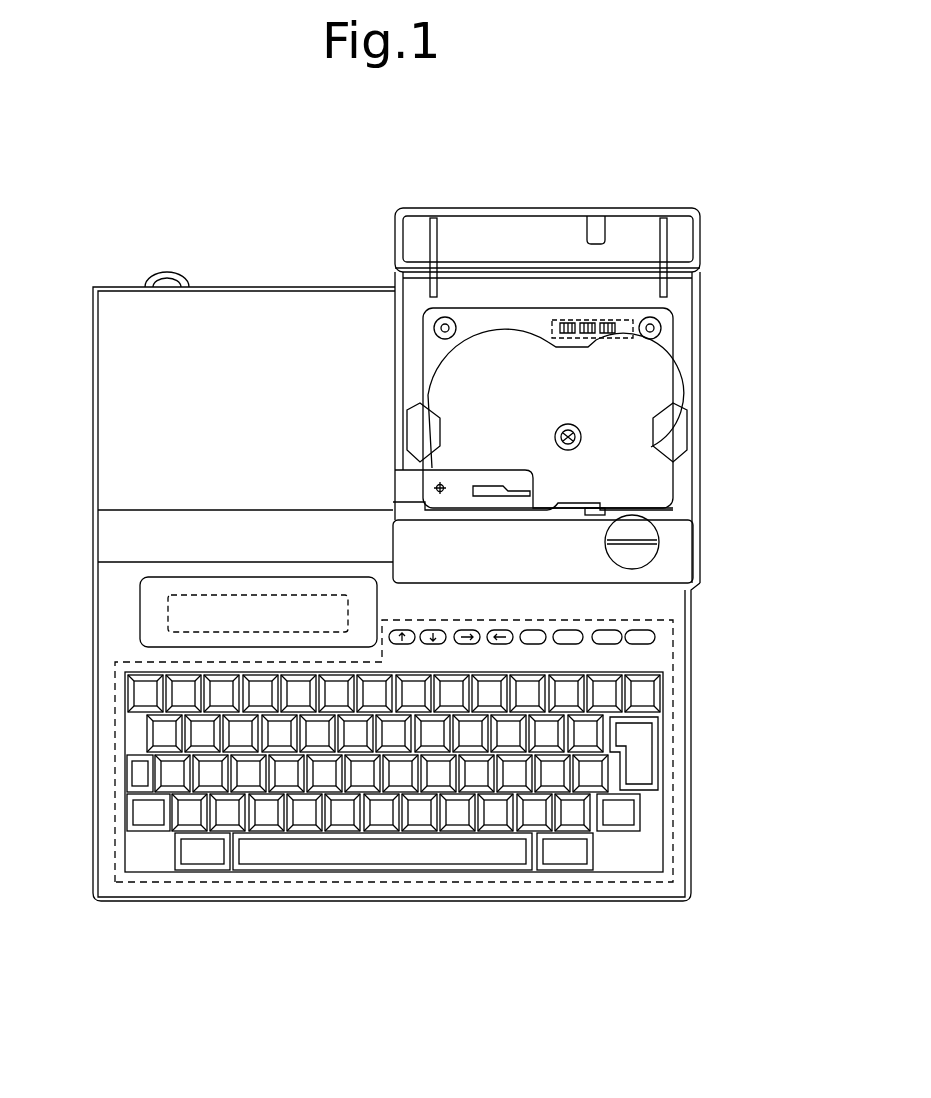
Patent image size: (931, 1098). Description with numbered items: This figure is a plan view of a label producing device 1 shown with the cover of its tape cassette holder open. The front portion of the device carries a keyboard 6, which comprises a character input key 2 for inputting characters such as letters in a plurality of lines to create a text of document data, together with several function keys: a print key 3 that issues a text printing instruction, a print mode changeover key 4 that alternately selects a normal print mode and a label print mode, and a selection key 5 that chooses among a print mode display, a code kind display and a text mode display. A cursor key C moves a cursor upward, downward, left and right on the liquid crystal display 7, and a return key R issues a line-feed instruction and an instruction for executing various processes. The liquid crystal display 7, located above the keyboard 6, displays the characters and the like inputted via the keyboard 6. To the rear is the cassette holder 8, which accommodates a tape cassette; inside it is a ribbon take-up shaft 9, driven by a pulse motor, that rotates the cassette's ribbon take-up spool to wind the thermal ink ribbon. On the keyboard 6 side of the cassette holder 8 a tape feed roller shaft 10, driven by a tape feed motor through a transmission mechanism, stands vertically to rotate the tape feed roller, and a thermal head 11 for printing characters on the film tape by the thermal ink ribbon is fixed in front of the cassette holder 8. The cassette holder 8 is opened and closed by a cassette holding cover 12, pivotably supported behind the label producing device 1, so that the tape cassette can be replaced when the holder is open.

The label producing device 1 is at (268, 268).
The character input key 2 is at (557, 775).
The print key 3 is at (647, 630).
The print mode changeover key 4 is at (613, 632).
The selection key 5 is at (567, 645).
The keyboard 6 is at (675, 668).
The liquid crystal display 7 is at (168, 614).
The cassette holder 8 is at (645, 375).
The ribbon take-up shaft 9 is at (578, 447).
The tape feed roller shaft 10 is at (433, 487).
The thermal head 11 is at (490, 486).
The cassette holding cover 12 is at (628, 210).
The cursor key C is at (420, 618).
The return key R is at (648, 750).